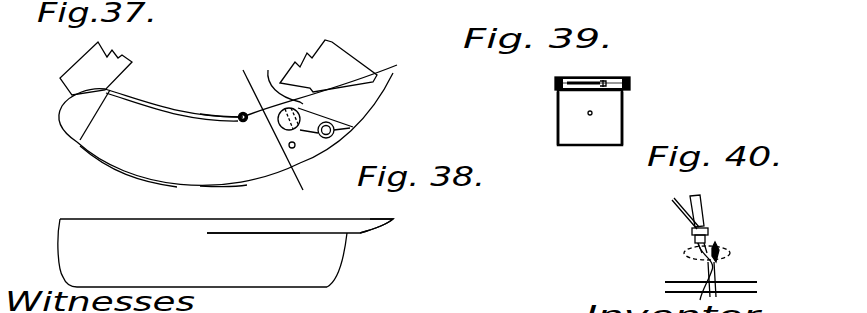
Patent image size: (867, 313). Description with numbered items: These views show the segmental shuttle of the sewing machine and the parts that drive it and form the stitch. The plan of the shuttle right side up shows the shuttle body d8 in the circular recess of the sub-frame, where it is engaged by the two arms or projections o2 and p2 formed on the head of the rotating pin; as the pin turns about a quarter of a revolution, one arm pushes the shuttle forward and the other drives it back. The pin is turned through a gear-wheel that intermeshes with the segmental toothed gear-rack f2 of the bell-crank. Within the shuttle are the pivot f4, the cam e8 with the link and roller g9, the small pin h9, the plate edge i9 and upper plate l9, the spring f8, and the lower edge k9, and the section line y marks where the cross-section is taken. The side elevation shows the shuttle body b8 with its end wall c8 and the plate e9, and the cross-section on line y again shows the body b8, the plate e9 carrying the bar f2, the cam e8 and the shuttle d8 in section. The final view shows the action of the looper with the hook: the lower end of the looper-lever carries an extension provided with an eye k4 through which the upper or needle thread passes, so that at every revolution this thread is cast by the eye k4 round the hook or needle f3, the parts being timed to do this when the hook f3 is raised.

In FIG. 37, the arm or projection o2 is at (96, 68).
In FIG. 37, the lever arm d8 is at (179, 138).
In FIG. 39, the lever arm d8 is at (590, 117).
In FIG. 37, the lever edge k9 is at (377, 97).
In FIG. 37, the plate l9 is at (329, 84).
In FIG. 37, the cam e8 is at (281, 131).
In FIG. 39, the cam e8 is at (593, 112).
In FIG. 37, the link with roller g9 is at (353, 127).
In FIG. 37, the pin h9 is at (288, 146).
In FIG. 38, the pin h9 is at (378, 222).
In FIG. 37, the dotted line f4 is at (236, 130).
In FIG. 37, the plate edge i9 is at (240, 118).
In FIG. 37, the arm or projection p2 is at (328, 66).
In FIG. 37, the spring f8 is at (281, 71).
In FIG. 37, the section line y is at (275, 128).
In FIG. 37, the plate e9 is at (247, 184).
In FIG. 38, the plate e9 is at (253, 228).
In FIG. 39, the plate e9 is at (632, 82).
In FIG. 38, the body b8 is at (225, 253).
In FIG. 39, the body b8 is at (637, 122).
In FIG. 38, the end wall c8 is at (288, 285).
In FIG. 39, the segmental toothed gear-rack f2 is at (577, 82).
In FIG. 40, the eye k4 is at (700, 205).
In FIG. 40, the hook or needle f3 is at (717, 245).